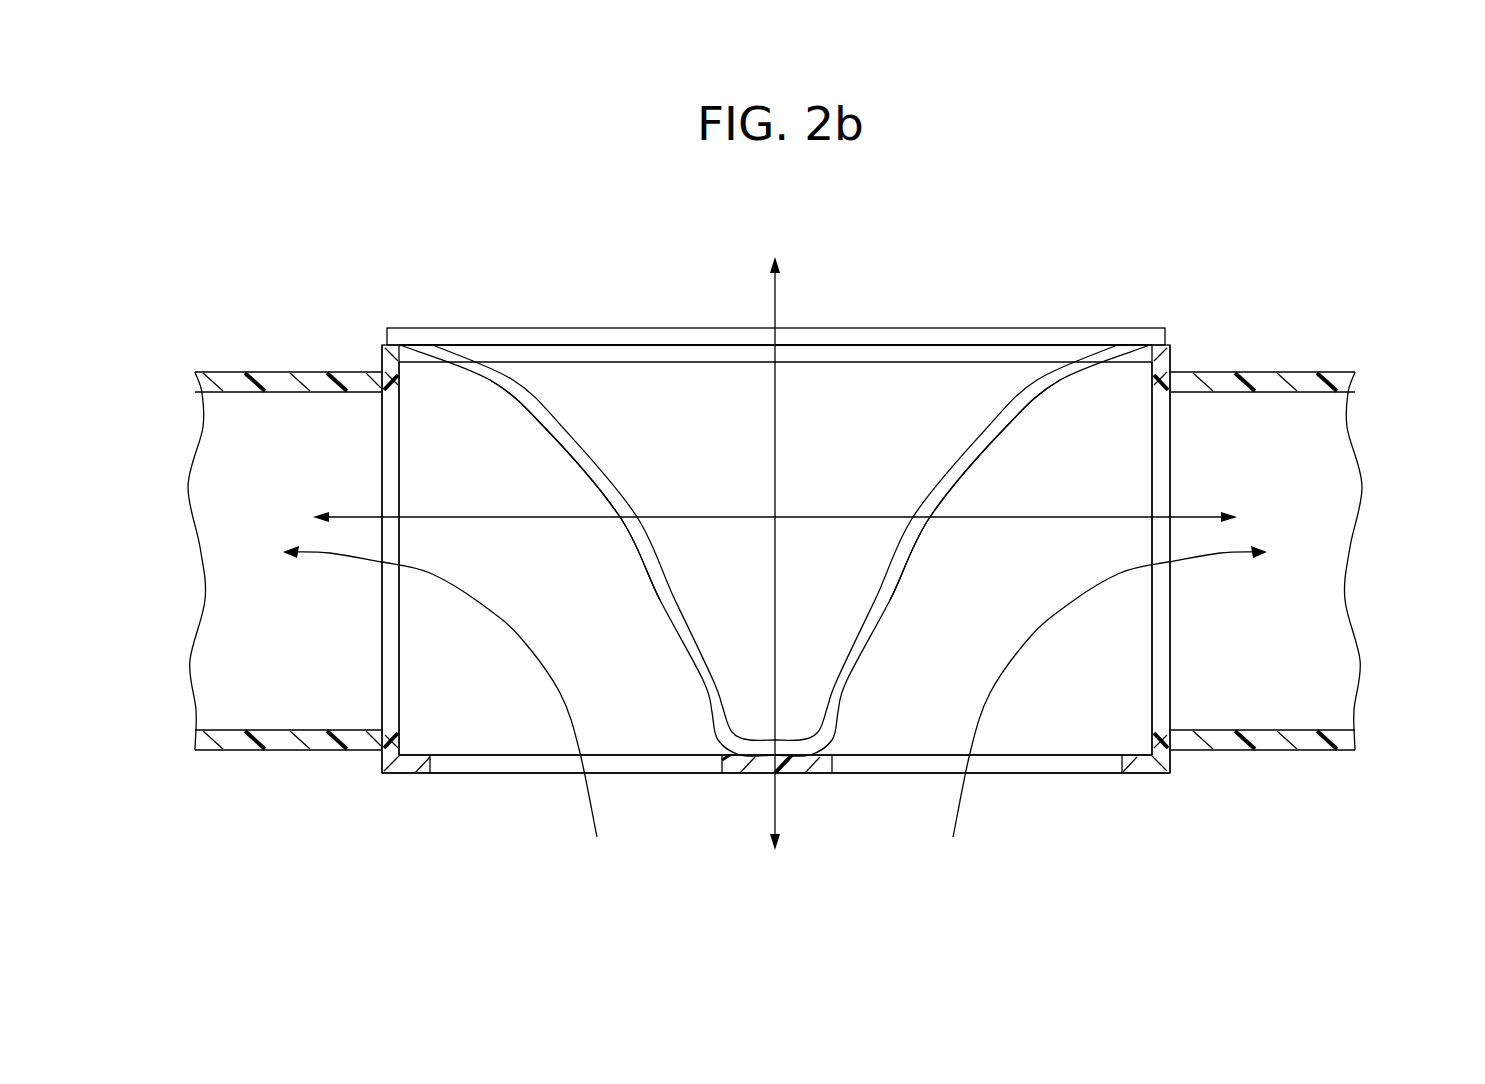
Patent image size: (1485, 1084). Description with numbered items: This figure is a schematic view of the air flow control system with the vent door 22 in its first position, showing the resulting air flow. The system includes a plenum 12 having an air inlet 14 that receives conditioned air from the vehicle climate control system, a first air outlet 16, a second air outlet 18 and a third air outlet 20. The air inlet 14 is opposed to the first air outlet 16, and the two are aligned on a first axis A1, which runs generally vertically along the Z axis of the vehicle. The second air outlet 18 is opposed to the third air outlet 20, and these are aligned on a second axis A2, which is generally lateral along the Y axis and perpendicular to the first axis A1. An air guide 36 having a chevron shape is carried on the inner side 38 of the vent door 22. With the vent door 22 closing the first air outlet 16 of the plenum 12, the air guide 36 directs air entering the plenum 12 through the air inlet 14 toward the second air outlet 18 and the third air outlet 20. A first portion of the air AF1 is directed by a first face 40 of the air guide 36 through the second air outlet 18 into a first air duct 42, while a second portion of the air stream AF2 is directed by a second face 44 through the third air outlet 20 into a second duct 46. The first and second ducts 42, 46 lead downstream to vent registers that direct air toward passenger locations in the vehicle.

The plenum 12 is at (1088, 478).
The air inlet 14 is at (870, 765).
The first air outlet 16 is at (817, 353).
The second air outlet 18 is at (386, 643).
The third air outlet 20 is at (1167, 678).
The vent door 22 is at (570, 328).
The air guide 36 is at (703, 706).
The inner side 38 is at (958, 347).
The first face 40 is at (577, 461).
The first air duct 42 is at (246, 611).
The second face 44 is at (900, 575).
The second duct 46 is at (1295, 640).
The first axis A1 is at (777, 473).
The second axis A2 is at (517, 519).
The first portion of air AF1 is at (556, 692).
The second portion of the air stream AF2 is at (994, 700).